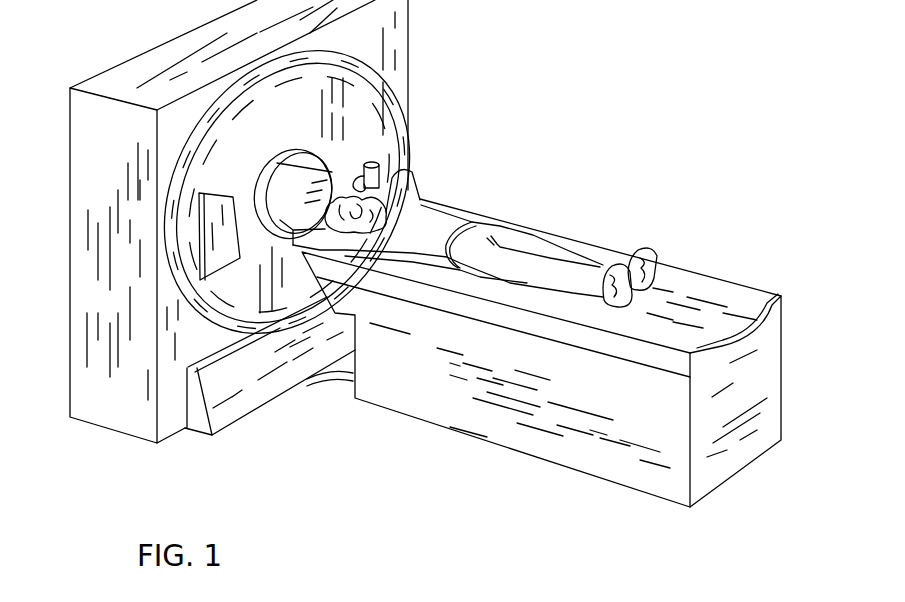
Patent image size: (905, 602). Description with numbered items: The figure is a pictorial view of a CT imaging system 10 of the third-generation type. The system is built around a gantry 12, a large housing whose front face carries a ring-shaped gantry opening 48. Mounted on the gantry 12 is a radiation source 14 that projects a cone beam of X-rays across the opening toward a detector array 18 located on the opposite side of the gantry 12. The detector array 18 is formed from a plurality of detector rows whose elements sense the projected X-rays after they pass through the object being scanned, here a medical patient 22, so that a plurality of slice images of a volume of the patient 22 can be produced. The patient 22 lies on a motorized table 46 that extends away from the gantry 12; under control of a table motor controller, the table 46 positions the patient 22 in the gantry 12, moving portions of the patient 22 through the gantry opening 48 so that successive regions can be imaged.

The CT imaging system 10 is at (328, 400).
The gantry 12 is at (222, 98).
The radiation source 14 is at (375, 166).
The detector array 18 is at (217, 267).
The patient 22 is at (420, 213).
The motorized table 46 is at (440, 403).
The gantry opening 48 is at (330, 168).